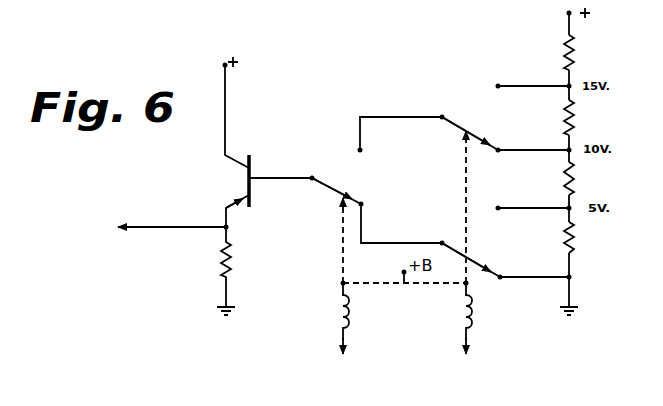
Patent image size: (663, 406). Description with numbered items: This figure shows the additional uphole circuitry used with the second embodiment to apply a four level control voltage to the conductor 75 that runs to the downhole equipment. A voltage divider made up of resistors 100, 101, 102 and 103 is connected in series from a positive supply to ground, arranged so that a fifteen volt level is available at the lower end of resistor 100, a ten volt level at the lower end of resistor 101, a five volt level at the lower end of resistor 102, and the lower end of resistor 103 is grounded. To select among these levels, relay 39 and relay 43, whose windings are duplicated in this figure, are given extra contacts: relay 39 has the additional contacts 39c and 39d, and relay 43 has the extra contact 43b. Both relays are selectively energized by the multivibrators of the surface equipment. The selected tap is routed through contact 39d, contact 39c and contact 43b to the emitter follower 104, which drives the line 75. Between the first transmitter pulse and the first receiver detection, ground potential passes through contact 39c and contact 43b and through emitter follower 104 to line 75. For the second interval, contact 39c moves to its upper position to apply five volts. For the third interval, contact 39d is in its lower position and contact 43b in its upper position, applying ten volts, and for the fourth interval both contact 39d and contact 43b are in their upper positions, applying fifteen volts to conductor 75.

The resistor 100 is at (573, 59).
The resistor 101 is at (575, 116).
The resistor 102 is at (574, 177).
The resistor 103 is at (575, 236).
The emitter follower 104 is at (252, 170).
The conductor 75 is at (153, 231).
The contact 43b is at (320, 185).
The contact 39c is at (477, 263).
The contact 39d is at (481, 138).
The relay 43 is at (338, 313).
The relay 39 is at (471, 313).